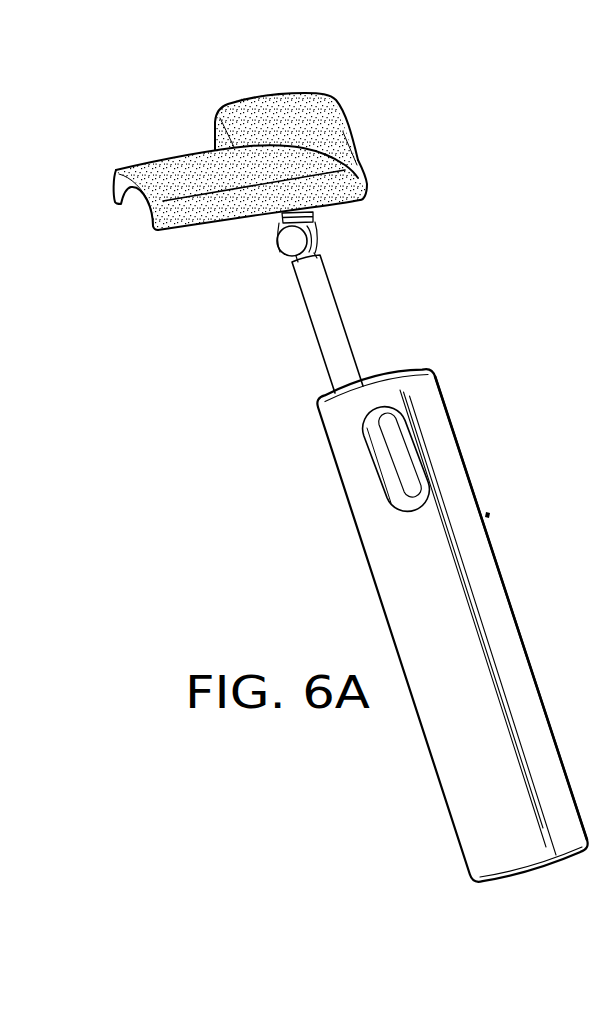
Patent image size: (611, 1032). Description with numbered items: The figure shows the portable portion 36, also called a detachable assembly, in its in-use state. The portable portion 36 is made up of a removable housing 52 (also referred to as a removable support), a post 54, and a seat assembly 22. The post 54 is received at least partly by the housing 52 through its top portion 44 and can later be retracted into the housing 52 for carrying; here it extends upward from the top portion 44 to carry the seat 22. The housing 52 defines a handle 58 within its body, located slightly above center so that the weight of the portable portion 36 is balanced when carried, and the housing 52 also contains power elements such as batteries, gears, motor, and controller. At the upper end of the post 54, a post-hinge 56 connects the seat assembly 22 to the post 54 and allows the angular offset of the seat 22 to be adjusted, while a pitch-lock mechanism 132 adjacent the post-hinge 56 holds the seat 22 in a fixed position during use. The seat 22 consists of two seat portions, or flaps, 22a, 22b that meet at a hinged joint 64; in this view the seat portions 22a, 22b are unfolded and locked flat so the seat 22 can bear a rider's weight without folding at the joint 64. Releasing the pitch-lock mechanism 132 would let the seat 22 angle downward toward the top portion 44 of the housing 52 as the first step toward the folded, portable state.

The seat assembly 22 is at (246, 168).
The seat portion 22a is at (216, 136).
The seat portion 22b is at (150, 220).
The hinged joint 64 is at (366, 168).
The pitch-lock mechanism 132 is at (314, 210).
The post-hinge 56 is at (293, 243).
The post 54 is at (345, 316).
The top portion 44 is at (452, 584).
The removable housing 52 is at (520, 598).
The handle 58 is at (410, 452).
The portable portion 36 is at (395, 541).